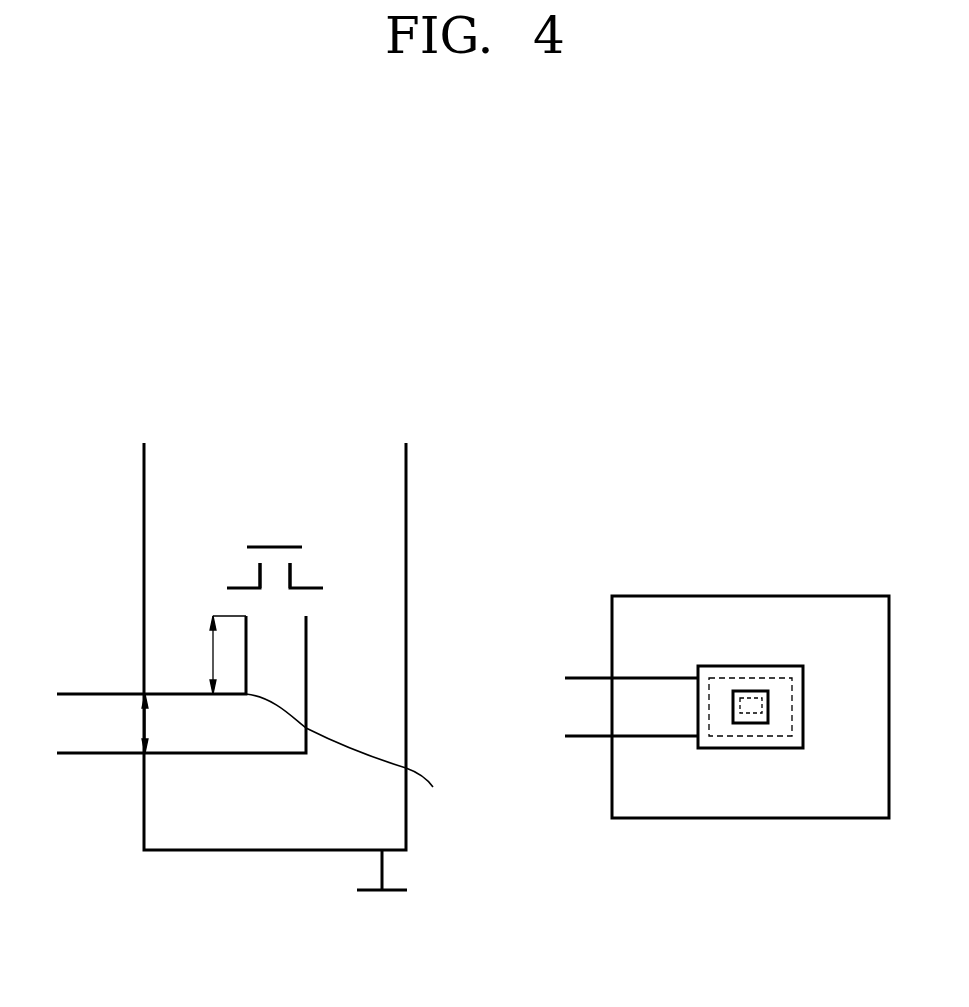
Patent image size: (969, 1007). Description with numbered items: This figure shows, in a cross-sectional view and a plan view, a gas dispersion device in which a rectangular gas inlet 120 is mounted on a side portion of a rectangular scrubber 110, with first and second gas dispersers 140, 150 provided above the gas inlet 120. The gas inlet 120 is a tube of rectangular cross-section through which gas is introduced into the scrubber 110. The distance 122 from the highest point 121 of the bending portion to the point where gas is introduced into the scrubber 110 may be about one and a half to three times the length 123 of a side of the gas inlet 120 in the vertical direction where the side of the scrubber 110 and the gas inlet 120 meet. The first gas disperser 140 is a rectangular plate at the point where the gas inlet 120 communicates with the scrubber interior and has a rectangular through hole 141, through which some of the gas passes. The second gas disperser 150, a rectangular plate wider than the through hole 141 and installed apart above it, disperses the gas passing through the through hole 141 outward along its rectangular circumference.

The scrubber 110 is at (406, 473).
The gas inlet 120 is at (306, 683).
The highest point 121 is at (360, 752).
The distance 122 is at (205, 655).
The length 123 is at (121, 723).
The first gas disperser 140 is at (313, 588).
The through hole 141 is at (275, 578).
The second gas disperser 150 is at (282, 547).